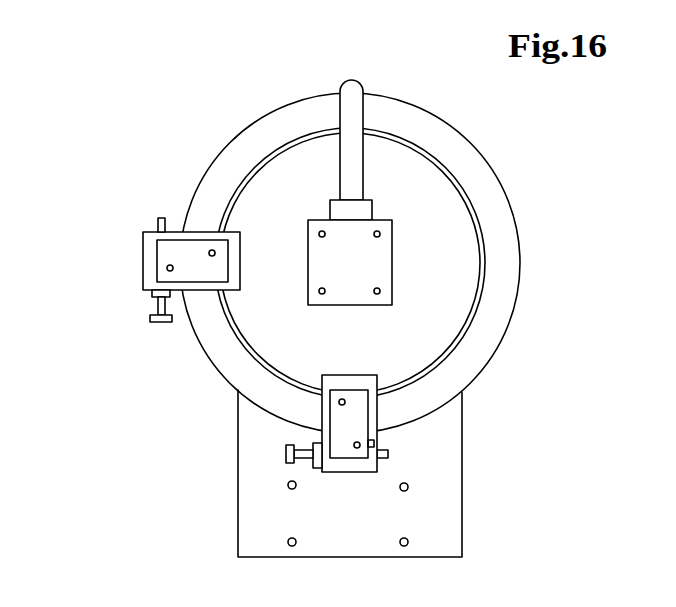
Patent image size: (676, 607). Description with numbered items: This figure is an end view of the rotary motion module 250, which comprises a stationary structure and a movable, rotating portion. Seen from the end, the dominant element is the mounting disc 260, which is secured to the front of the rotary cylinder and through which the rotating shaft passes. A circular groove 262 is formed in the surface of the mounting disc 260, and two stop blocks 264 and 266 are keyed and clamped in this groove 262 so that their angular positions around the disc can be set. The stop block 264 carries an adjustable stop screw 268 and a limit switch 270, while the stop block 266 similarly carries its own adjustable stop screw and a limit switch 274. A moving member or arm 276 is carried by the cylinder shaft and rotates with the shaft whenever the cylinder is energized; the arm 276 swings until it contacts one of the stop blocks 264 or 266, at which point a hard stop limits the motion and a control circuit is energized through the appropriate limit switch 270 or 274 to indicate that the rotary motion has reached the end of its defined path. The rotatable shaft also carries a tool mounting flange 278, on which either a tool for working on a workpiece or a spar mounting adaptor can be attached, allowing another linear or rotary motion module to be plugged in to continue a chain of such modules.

The rotary motion module 250 is at (260, 65).
The mounting disc 260 is at (222, 150).
The circular groove 262 is at (477, 317).
The stop block 264 is at (143, 256).
The stop block 266 is at (322, 405).
The adjustable stop screw 268 is at (158, 217).
The limit switch 270 is at (205, 285).
The limit switch 274 is at (368, 410).
The moving member or arm 276 is at (363, 87).
The tool mounting flange 278 is at (392, 253).